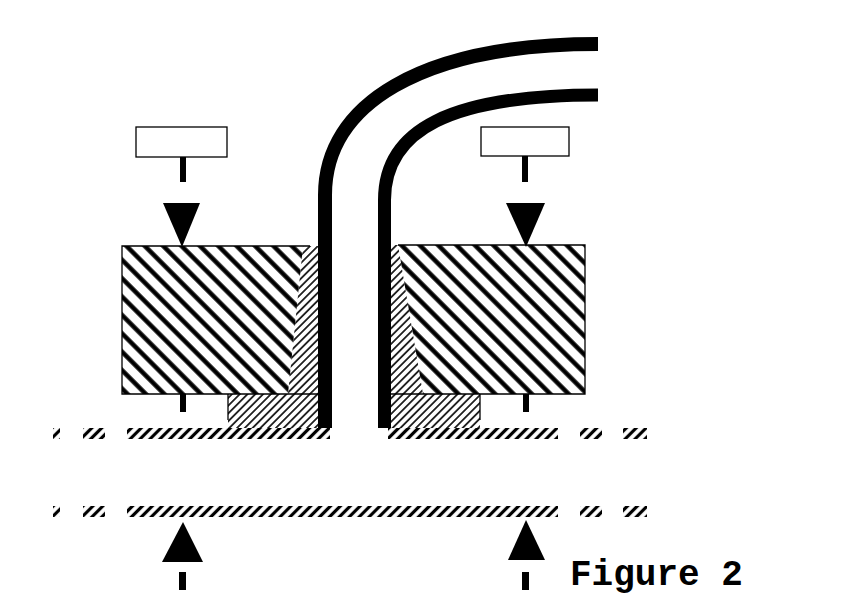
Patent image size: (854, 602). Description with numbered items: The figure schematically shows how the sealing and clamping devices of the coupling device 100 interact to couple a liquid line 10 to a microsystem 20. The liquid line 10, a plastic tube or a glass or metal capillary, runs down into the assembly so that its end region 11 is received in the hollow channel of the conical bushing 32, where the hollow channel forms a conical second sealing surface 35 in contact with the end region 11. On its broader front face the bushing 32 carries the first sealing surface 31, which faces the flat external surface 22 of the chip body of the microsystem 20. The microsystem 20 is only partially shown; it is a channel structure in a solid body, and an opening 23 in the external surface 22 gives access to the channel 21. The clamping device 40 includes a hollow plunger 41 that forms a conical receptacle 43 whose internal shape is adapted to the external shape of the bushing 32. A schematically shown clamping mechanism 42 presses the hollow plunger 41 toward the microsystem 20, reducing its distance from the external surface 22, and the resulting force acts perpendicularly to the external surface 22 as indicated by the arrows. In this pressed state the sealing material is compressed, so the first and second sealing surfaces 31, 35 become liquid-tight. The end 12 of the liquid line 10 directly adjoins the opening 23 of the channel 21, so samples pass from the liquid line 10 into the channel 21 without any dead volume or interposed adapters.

The coupling device 100 is at (267, 148).
The liquid line 10 is at (386, 100).
The end region 11 is at (330, 300).
The end 12 is at (326, 435).
The microsystem 20 is at (72, 400).
The channel 21 is at (482, 482).
The external surface 22 is at (588, 427).
The opening 23 is at (368, 432).
The first sealing surface 31 is at (258, 425).
The bushing 32 is at (480, 420).
The second sealing surface 35 is at (307, 435).
The clamping device 40 is at (542, 315).
The hollow plunger 41 is at (130, 338).
The clamping mechanism 42 is at (147, 152).
The conical receptacle 43 is at (397, 226).